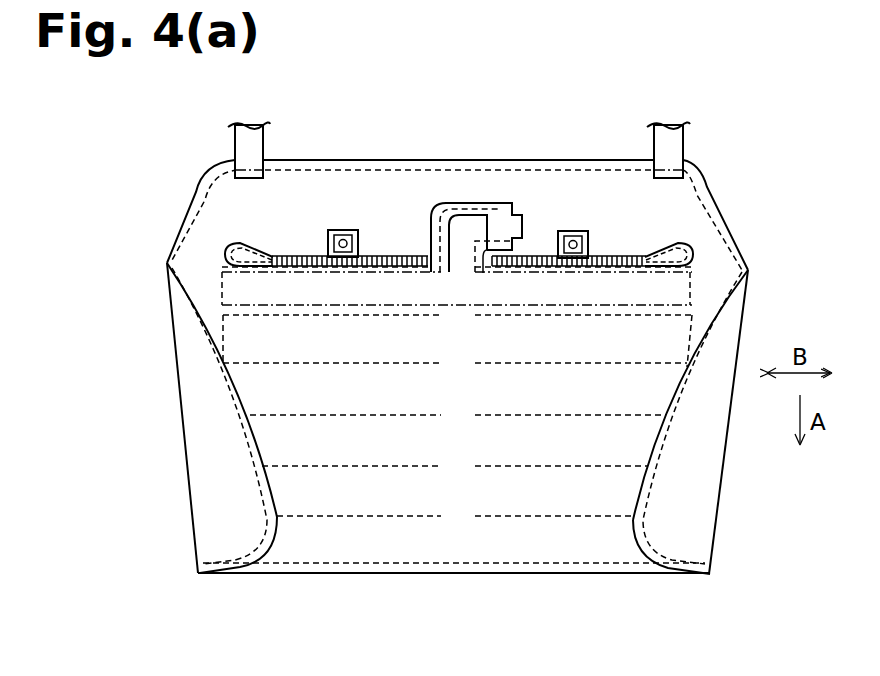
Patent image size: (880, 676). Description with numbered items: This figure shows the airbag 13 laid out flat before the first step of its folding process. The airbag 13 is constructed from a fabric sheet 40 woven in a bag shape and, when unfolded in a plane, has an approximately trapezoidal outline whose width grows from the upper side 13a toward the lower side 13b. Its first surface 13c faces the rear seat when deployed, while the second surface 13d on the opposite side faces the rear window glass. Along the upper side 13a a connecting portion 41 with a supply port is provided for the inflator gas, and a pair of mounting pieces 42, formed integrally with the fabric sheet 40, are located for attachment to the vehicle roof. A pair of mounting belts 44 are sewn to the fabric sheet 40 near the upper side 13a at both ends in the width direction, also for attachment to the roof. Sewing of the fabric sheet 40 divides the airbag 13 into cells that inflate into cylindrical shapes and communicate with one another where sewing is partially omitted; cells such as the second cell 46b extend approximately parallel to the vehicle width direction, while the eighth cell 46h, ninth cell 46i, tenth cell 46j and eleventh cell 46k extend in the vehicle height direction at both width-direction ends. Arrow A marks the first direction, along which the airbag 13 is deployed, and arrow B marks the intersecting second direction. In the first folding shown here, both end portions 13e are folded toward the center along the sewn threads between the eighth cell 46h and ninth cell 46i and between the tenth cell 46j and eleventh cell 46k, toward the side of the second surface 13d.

The airbag 13 is at (464, 387).
The upper side 13a is at (355, 143).
The lower side 13b is at (620, 575).
The first surface 13c is at (210, 522).
The second surface 13d is at (208, 227).
The end portions 13e is at (232, 542).
The fabric sheet 40 is at (730, 217).
The connecting portion 41 is at (481, 203).
The mounting pieces 42 is at (343, 230).
The mounting belts 44 is at (235, 138).
The second cell 46b is at (687, 292).
The eighth cell 46h is at (210, 447).
The ninth cell 46i is at (200, 287).
The tenth cell 46j is at (705, 312).
The eleventh cell 46k is at (702, 508).